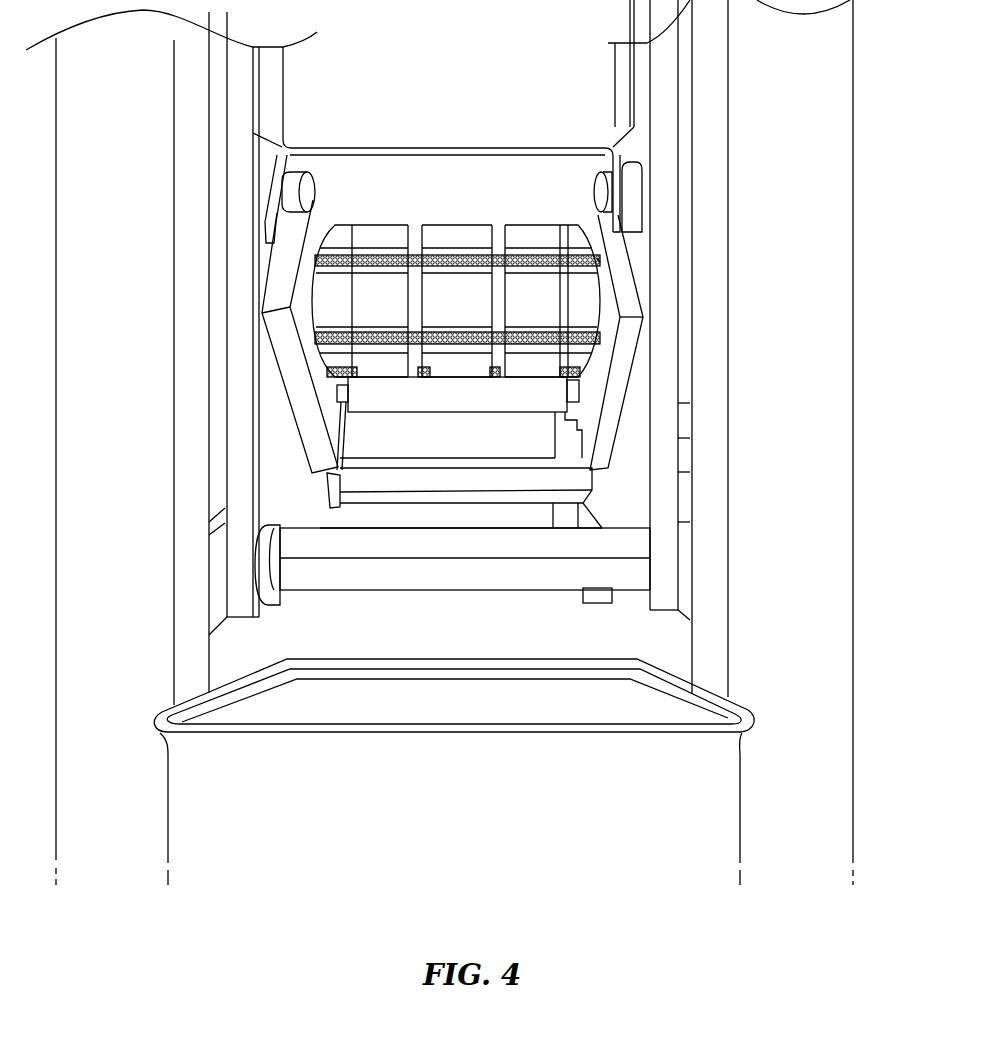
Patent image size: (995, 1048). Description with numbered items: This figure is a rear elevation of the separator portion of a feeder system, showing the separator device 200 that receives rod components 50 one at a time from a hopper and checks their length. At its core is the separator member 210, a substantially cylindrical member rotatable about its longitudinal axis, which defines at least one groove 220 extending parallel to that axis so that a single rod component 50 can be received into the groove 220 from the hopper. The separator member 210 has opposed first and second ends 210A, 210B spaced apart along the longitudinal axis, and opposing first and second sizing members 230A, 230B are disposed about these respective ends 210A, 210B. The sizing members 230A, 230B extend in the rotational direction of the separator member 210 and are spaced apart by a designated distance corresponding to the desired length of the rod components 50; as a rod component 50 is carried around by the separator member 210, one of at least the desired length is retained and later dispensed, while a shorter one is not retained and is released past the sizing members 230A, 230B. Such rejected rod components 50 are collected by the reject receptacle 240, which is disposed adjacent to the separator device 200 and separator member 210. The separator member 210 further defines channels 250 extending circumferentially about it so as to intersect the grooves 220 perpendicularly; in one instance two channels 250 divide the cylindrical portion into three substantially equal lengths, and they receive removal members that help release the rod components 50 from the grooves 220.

The rod component 50 is at (598, 260).
The separator device 200 is at (748, 268).
The separator member 210 is at (467, 240).
The first end 210A is at (330, 298).
The second end 210B is at (560, 299).
The groove 220 is at (533, 250).
The first sizing member 230A is at (283, 335).
The second sizing member 230B is at (628, 338).
The reject receptacle 240 is at (430, 707).
The channel 250 is at (425, 240).